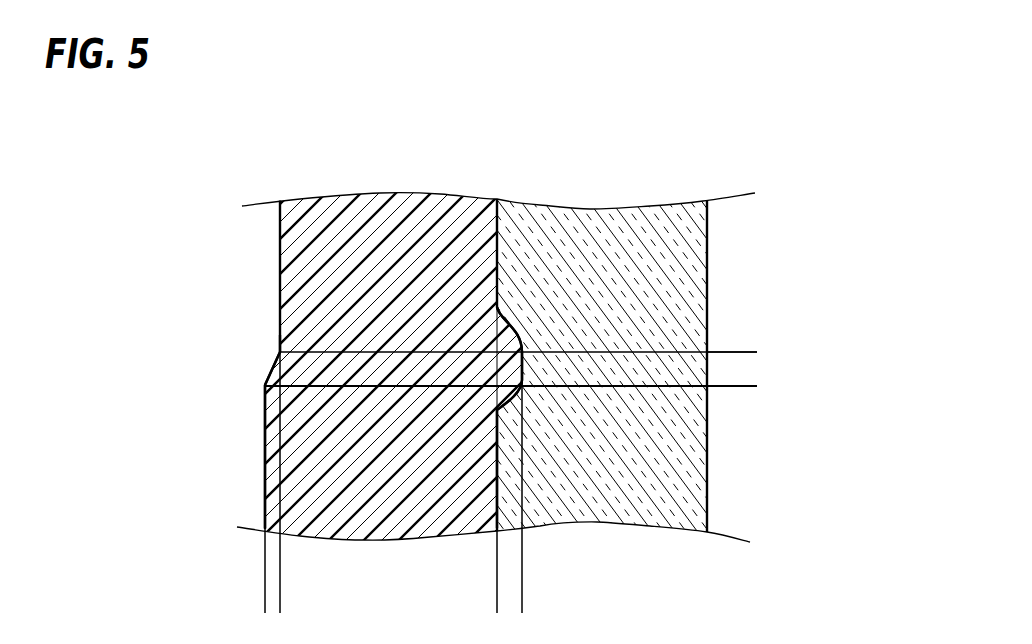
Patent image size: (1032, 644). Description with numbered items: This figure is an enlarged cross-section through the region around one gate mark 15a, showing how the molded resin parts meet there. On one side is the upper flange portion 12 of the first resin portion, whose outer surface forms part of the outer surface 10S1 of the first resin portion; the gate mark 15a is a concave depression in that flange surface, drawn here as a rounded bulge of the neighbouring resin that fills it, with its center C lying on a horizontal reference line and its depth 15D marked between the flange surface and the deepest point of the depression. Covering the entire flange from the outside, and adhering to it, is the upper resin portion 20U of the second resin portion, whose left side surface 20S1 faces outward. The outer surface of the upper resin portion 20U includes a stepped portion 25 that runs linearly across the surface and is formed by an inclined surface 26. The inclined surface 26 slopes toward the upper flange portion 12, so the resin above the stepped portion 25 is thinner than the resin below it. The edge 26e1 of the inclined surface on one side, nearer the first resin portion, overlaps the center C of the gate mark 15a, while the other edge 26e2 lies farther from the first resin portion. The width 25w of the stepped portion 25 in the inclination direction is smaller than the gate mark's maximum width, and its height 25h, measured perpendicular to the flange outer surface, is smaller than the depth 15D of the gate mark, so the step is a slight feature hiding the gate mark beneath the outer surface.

The upper resin portion 20U is at (352, 232).
The center of gate mark C is at (513, 352).
The gate mark 15a is at (500, 326).
The upper flange portion 12 is at (613, 235).
The edge of inclined surface on one side 26e1 is at (280, 352).
The stepped portion 25 is at (257, 362).
The inclined surface 26 is at (268, 376).
The edge of inclined surface on the other side 26e2 is at (265, 385).
The first side surface of first member 20S1 is at (265, 483).
The height of stepped portion 25h is at (302, 597).
The outer surface of first resin portion 10S1 is at (497, 458).
The depth of gate mark 15D is at (477, 603).
The width of stepped portion 25w is at (751, 330).